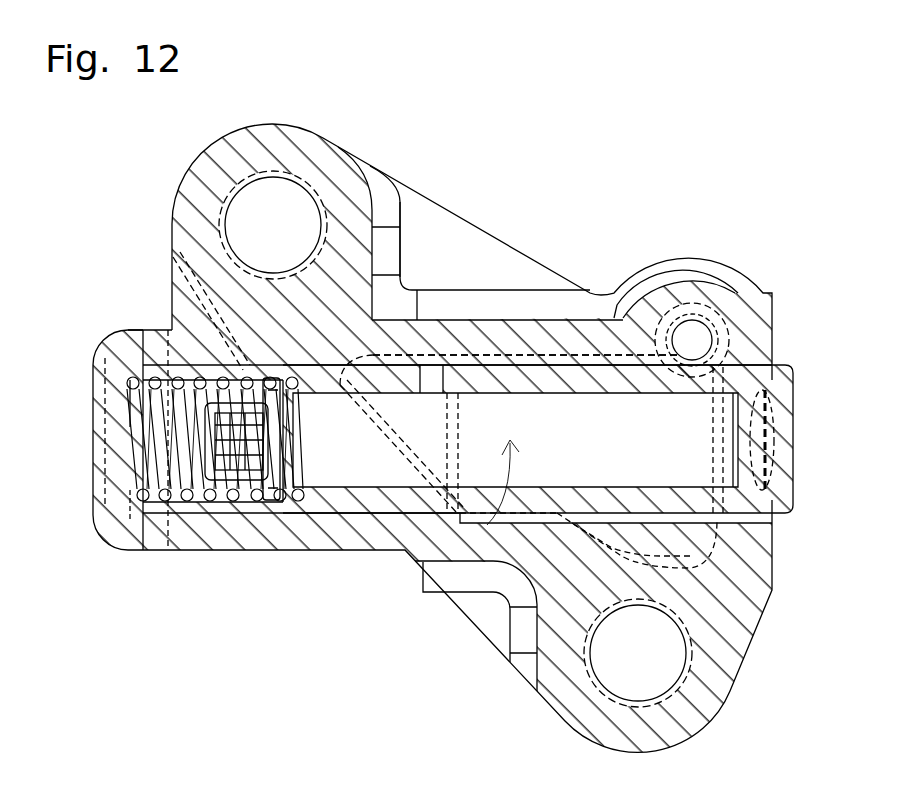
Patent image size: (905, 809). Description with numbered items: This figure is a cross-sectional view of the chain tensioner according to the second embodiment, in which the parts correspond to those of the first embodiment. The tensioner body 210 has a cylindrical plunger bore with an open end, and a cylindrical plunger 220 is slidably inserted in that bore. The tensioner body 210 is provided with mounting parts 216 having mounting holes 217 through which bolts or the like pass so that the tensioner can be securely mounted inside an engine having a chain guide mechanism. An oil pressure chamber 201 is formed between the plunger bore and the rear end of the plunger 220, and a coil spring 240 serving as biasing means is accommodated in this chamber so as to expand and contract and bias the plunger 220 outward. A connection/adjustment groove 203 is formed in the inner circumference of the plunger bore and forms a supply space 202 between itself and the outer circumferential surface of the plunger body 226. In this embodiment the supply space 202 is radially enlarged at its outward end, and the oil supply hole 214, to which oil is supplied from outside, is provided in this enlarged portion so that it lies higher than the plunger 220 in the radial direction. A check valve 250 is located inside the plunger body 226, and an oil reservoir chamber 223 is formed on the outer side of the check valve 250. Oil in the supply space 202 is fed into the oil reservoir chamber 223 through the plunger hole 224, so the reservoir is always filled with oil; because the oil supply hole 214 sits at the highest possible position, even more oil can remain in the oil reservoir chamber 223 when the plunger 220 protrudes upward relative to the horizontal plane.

The mounting part 216 is at (197, 165).
The mounting hole 217 is at (262, 225).
The coil spring 240 is at (158, 358).
The plunger hole 224 is at (430, 365).
The tensioner body 210 is at (500, 357).
The supply space 202 is at (505, 358).
The connection/adjustment groove 203 is at (580, 355).
The oil supply hole 214 is at (694, 338).
The plunger 220 is at (775, 367).
The oil pressure chamber 201 is at (183, 468).
The check valve 250 is at (235, 490).
The plunger body 226 is at (363, 505).
The oil reservoir chamber 223 is at (477, 513).